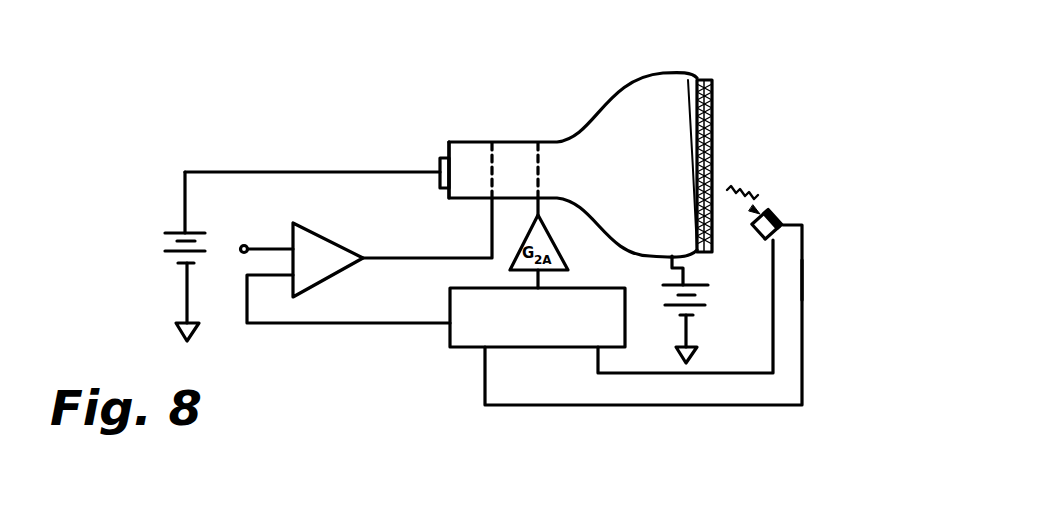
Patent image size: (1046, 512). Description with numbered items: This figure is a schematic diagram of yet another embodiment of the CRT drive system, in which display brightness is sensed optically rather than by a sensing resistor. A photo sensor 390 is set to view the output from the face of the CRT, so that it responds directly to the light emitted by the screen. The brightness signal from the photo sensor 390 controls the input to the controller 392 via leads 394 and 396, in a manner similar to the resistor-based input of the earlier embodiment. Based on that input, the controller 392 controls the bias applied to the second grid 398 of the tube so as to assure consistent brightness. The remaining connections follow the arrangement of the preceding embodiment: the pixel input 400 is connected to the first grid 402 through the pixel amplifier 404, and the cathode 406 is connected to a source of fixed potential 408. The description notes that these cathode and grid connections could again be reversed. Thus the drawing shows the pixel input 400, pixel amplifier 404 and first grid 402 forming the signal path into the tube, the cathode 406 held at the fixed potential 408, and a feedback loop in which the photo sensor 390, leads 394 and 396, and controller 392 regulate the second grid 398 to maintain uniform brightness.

The photo sensor 390 is at (793, 200).
The controller 392 is at (572, 287).
The lead 394 is at (771, 264).
The lead 396 is at (803, 278).
The second grid 398 is at (542, 137).
The pixel input 400 is at (253, 232).
The first grid 402 is at (491, 168).
The pixel amplifier 404 is at (331, 242).
The cathode 406 is at (436, 168).
The source of fixed potential 408 is at (175, 233).